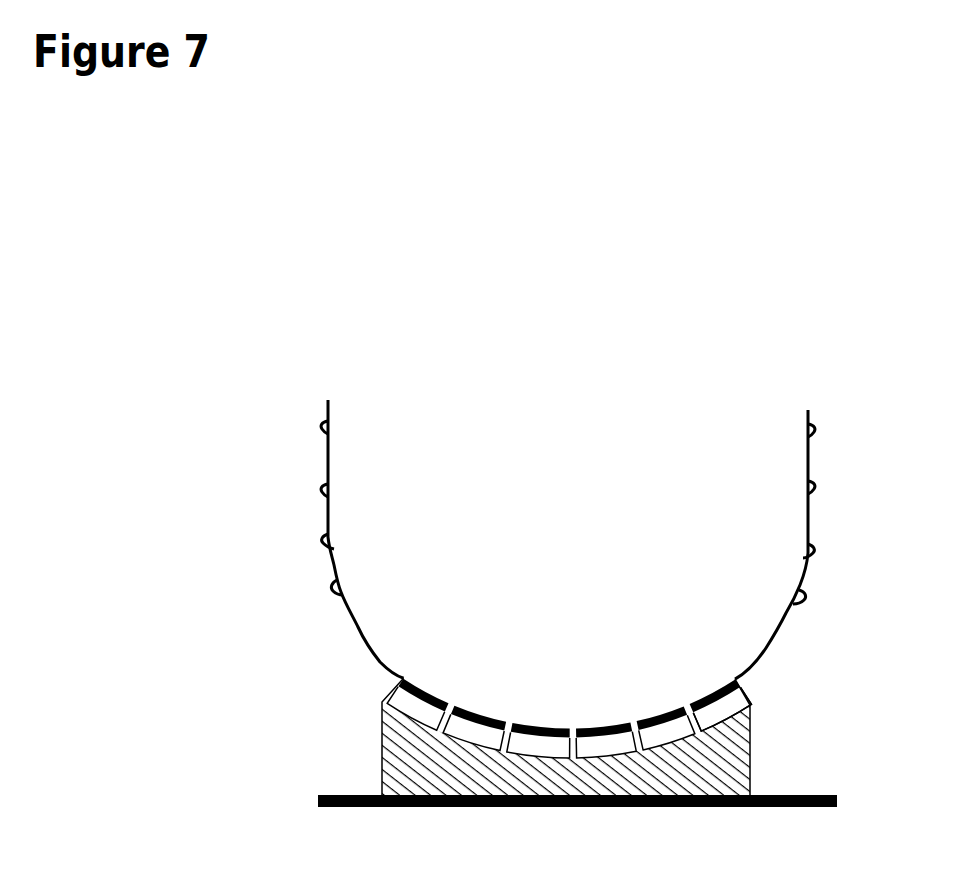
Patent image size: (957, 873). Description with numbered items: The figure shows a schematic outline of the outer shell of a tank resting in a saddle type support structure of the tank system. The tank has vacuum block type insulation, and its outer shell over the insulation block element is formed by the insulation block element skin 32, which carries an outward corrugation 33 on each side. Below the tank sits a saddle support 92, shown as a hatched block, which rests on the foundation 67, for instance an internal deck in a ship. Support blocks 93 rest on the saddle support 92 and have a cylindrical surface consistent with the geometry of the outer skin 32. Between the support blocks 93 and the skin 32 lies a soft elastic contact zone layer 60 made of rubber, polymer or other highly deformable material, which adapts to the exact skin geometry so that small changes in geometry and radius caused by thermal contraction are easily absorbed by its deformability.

The insulation block element skin 32 is at (811, 527).
The outward corrugation 33 is at (325, 489).
The contact zone layer 60 is at (600, 730).
The saddle support 92 is at (381, 749).
The support blocks 93 is at (720, 705).
The foundation 67 is at (793, 795).